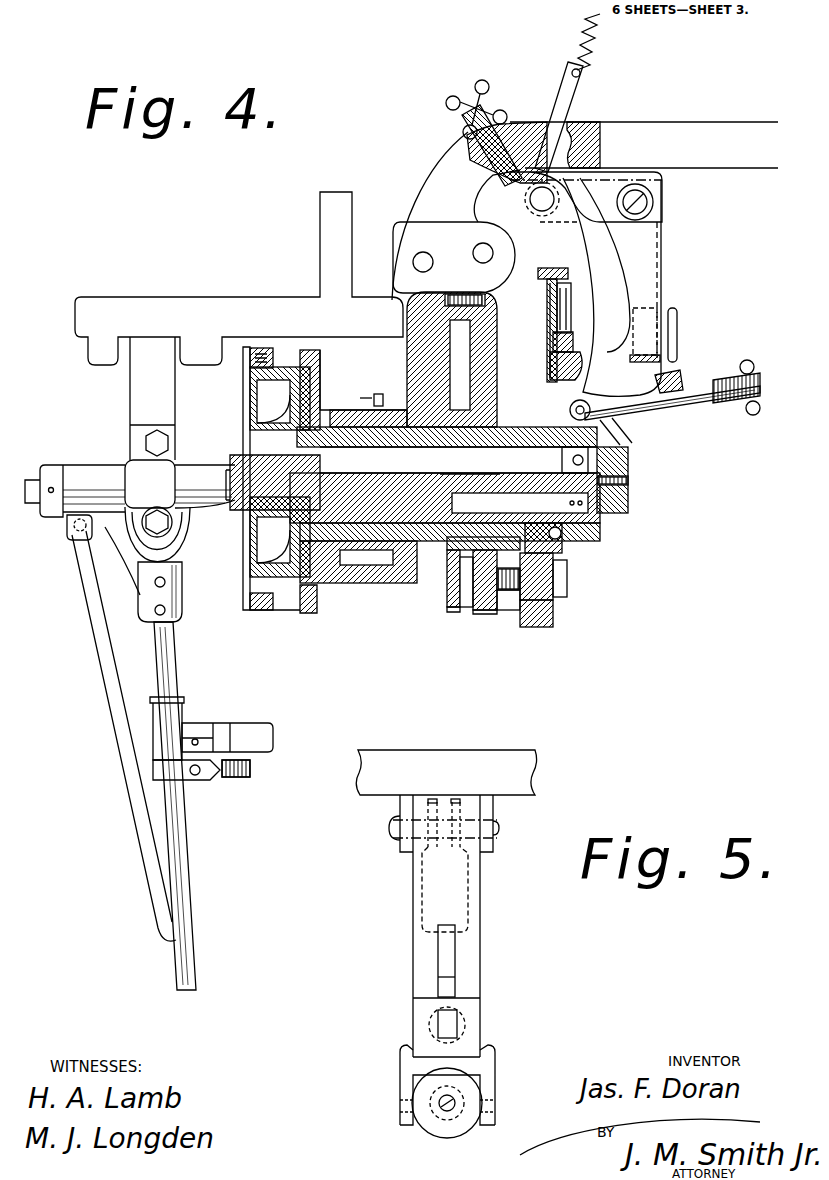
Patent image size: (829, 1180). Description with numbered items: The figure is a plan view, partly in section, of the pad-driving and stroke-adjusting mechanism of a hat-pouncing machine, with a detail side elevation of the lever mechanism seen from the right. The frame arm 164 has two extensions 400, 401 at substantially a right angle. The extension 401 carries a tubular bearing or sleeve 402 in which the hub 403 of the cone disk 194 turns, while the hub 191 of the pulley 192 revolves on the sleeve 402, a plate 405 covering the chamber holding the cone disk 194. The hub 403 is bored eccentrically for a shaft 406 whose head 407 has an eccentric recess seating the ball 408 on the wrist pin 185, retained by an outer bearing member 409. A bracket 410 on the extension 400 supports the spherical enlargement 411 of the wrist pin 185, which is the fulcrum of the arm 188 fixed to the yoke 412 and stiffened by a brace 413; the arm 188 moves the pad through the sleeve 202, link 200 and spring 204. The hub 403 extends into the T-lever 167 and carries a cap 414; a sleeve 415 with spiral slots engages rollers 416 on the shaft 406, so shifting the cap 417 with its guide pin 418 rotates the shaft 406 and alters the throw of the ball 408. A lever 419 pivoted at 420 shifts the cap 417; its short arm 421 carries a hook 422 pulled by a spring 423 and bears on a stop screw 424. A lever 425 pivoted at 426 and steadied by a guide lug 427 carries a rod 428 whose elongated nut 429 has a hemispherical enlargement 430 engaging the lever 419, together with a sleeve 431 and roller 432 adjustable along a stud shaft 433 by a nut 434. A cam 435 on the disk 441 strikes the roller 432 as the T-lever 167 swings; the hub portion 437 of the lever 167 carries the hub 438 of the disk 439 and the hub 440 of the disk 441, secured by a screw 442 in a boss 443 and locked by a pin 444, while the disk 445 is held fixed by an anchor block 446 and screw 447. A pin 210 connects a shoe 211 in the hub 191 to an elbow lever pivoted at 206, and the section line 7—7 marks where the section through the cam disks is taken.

In FIG. 4, the frame arm 164 is at (699, 127).
In FIG. 5, the frame arm 164 is at (510, 770).
In FIG. 4, the T-lever 167 is at (545, 580).
In FIG. 4, the wrist pin 185 is at (33, 468).
In FIG. 4, the arm 188 is at (176, 673).
In FIG. 4, the hub of the pulley 191 is at (333, 393).
In FIG. 4, the pulley 192 is at (312, 613).
In FIG. 4, the cone disk 194 is at (322, 375).
In FIG. 4, the link 200 is at (250, 730).
In FIG. 4, the sleeve 202 is at (170, 718).
In FIG. 4, the spring 204 is at (212, 786).
In FIG. 4, the pivot 206 is at (417, 256).
In FIG. 4, the pin 210 is at (378, 394).
In FIG. 4, the shoe 211 is at (355, 389).
In FIG. 4, the section line 7 is at (519, 345).
In FIG. 4, the extension 400 is at (230, 306).
In FIG. 4, the extension 401 is at (410, 345).
In FIG. 4, the sleeve or tubular bearing 402 is at (388, 547).
In FIG. 4, the hub 403 is at (377, 568).
In FIG. 4, the plate 405 is at (249, 410).
In FIG. 4, the shaft 406 is at (458, 460).
In FIG. 4, the head 407 is at (252, 390).
In FIG. 4, the ball 408 is at (257, 552).
In FIG. 4, the outer bearing member 409 is at (253, 514).
In FIG. 4, the bracket 410 is at (142, 384).
In FIG. 4, the spherical enlargement 411 is at (170, 445).
In FIG. 4, the yoke 412 is at (108, 526).
In FIG. 4, the brace 413 is at (108, 701).
In FIG. 4, the cap or plate 414 is at (556, 537).
In FIG. 4, the sleeve 415 is at (600, 512).
In FIG. 4, the rollers 416 is at (628, 478).
In FIG. 4, the cap 417 is at (566, 528).
In FIG. 5, the cap 417 is at (443, 1130).
In FIG. 4, the guide pin 418 is at (565, 547).
In FIG. 4, the lever 419 is at (650, 262).
In FIG. 5, the lever 419 is at (478, 888).
In FIG. 4, the pivot 420 is at (653, 205).
In FIG. 5, the pivot 420 is at (493, 828).
In FIG. 4, the short arm 421 is at (593, 191).
In FIG. 4, the hook 422 is at (566, 104).
In FIG. 4, the spring 423 is at (613, 45).
In FIG. 4, the adjustable stop screw 424 is at (500, 130).
In FIG. 4, the lever 425 is at (593, 253).
In FIG. 4, the pivot 426 is at (456, 231).
In FIG. 4, the guide lug 427 is at (677, 338).
In FIG. 5, the guide lug 427 is at (455, 958).
In FIG. 4, the rod 428 is at (655, 420).
In FIG. 4, the sleeve or elongated nut 429 is at (722, 405).
In FIG. 4, the hemispherical enlargement 430 is at (664, 380).
In FIG. 4, the sleeve 431 is at (583, 300).
In FIG. 4, the roller 432 is at (583, 352).
In FIG. 4, the stud shaft 433 is at (549, 268).
In FIG. 4, the nut 434 is at (568, 276).
In FIG. 4, the cam 435 is at (586, 358).
In FIG. 4, the hub portion 437 is at (442, 560).
In FIG. 4, the hub 438 is at (462, 560).
In FIG. 4, the disk 439 is at (462, 608).
In FIG. 4, the hub 440 is at (562, 556).
In FIG. 4, the disk 441 is at (512, 617).
In FIG. 4, the screw 442 is at (555, 572).
In FIG. 4, the boss 443 is at (522, 594).
In FIG. 4, the pin 444 is at (470, 463).
In FIG. 4, the disk 445 is at (475, 615).
In FIG. 4, the anchor block 446 is at (471, 287).
In FIG. 4, the screw 447 is at (440, 300).